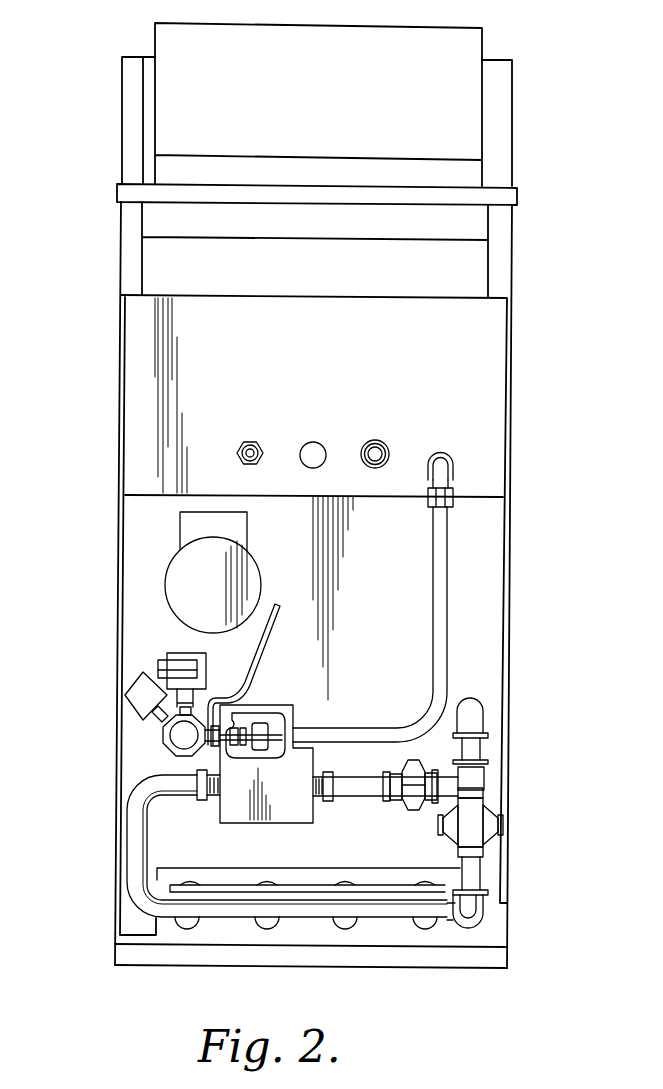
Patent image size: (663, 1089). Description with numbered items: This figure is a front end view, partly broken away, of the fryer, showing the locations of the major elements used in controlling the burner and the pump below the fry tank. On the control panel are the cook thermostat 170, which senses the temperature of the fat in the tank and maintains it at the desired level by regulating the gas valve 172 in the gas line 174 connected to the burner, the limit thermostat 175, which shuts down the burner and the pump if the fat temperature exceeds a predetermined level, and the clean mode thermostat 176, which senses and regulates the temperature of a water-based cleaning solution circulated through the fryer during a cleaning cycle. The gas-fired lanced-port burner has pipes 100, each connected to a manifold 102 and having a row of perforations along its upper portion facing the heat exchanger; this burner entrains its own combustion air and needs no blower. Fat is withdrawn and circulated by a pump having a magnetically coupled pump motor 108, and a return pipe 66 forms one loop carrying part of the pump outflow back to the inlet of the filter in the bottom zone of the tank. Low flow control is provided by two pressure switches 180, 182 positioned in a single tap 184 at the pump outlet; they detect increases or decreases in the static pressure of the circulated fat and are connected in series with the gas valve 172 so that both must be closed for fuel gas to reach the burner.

The return pipe 66 is at (450, 557).
The pipes 100 is at (263, 921).
The manifold 102 is at (227, 918).
The pump motor 108 is at (170, 562).
The cook thermostat 170 is at (310, 442).
The gas valve 172 is at (293, 823).
The gas line 174 is at (367, 797).
The limit thermostat 175 is at (242, 444).
The clean mode thermostat 176 is at (375, 440).
The pressure switch 180 is at (168, 653).
The pressure switch 182 is at (132, 686).
The tap 184 is at (163, 731).